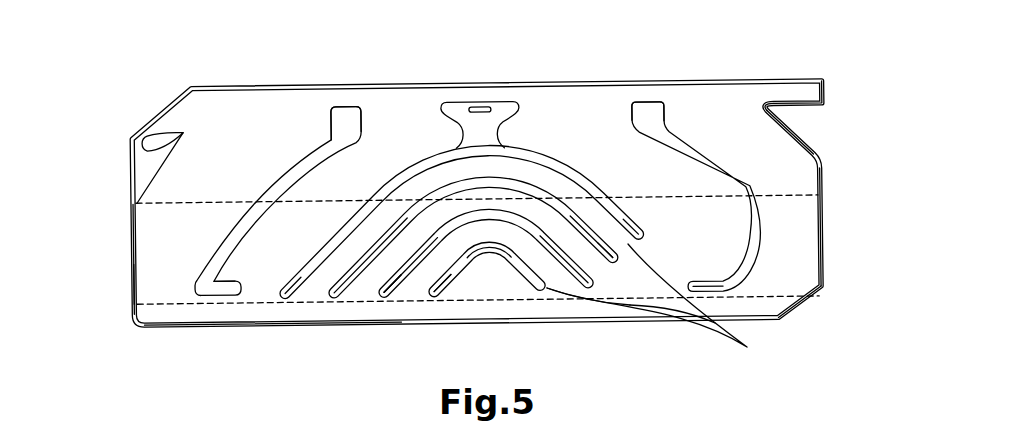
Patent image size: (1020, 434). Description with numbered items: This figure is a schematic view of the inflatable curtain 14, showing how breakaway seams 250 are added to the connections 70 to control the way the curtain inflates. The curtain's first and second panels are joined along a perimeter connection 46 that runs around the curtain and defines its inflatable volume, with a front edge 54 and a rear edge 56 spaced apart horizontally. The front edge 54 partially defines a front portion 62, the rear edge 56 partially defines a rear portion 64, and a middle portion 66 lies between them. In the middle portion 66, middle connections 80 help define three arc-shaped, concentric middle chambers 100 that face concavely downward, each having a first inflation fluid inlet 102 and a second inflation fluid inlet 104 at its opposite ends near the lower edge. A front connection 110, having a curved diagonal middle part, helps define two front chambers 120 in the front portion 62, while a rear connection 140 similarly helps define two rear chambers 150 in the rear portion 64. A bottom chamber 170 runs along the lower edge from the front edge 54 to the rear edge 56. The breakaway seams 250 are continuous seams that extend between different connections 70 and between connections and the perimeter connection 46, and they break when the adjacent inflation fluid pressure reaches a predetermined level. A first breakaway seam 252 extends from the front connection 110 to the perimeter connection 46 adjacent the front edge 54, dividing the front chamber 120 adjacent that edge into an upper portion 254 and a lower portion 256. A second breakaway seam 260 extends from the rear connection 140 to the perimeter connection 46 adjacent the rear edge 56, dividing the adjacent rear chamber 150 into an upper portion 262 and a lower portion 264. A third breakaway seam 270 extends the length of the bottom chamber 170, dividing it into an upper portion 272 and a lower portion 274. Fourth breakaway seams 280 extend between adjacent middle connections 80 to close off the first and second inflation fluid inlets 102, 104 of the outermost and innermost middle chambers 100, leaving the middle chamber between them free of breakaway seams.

The inflatable curtain 14 is at (183, 52).
The perimeter connection 46 is at (213, 327).
The front edge 54 is at (138, 257).
The rear edge 56 is at (823, 208).
The front portion 62 is at (167, 188).
The rear portion 64 is at (801, 170).
The middle portion 66 is at (478, 277).
The connections 70 is at (298, 168).
The middle connections 80 is at (485, 248).
The middle chambers 100 is at (441, 244).
The first inflation fluid inlet 102 is at (412, 292).
The second inflation fluid inlet 104 is at (662, 310).
The front connection 110 is at (272, 190).
The front chambers 120 is at (373, 160).
The rear connection 140 is at (702, 162).
The rear chambers 150 is at (608, 153).
The bottom chamber 170 is at (422, 298).
The breakaway seams 250 is at (213, 201).
The first breakaway seam 252 is at (184, 205).
The upper portion 254 is at (183, 163).
The lower portion 256 is at (163, 268).
The second breakaway seam 260 is at (769, 193).
The upper portion 262 is at (793, 160).
The lower portion 264 is at (785, 270).
The third breakaway seam 270 is at (468, 299).
The upper portion 272 is at (543, 297).
The lower portion 274 is at (605, 306).
The fourth breakaway seams 280 is at (313, 292).